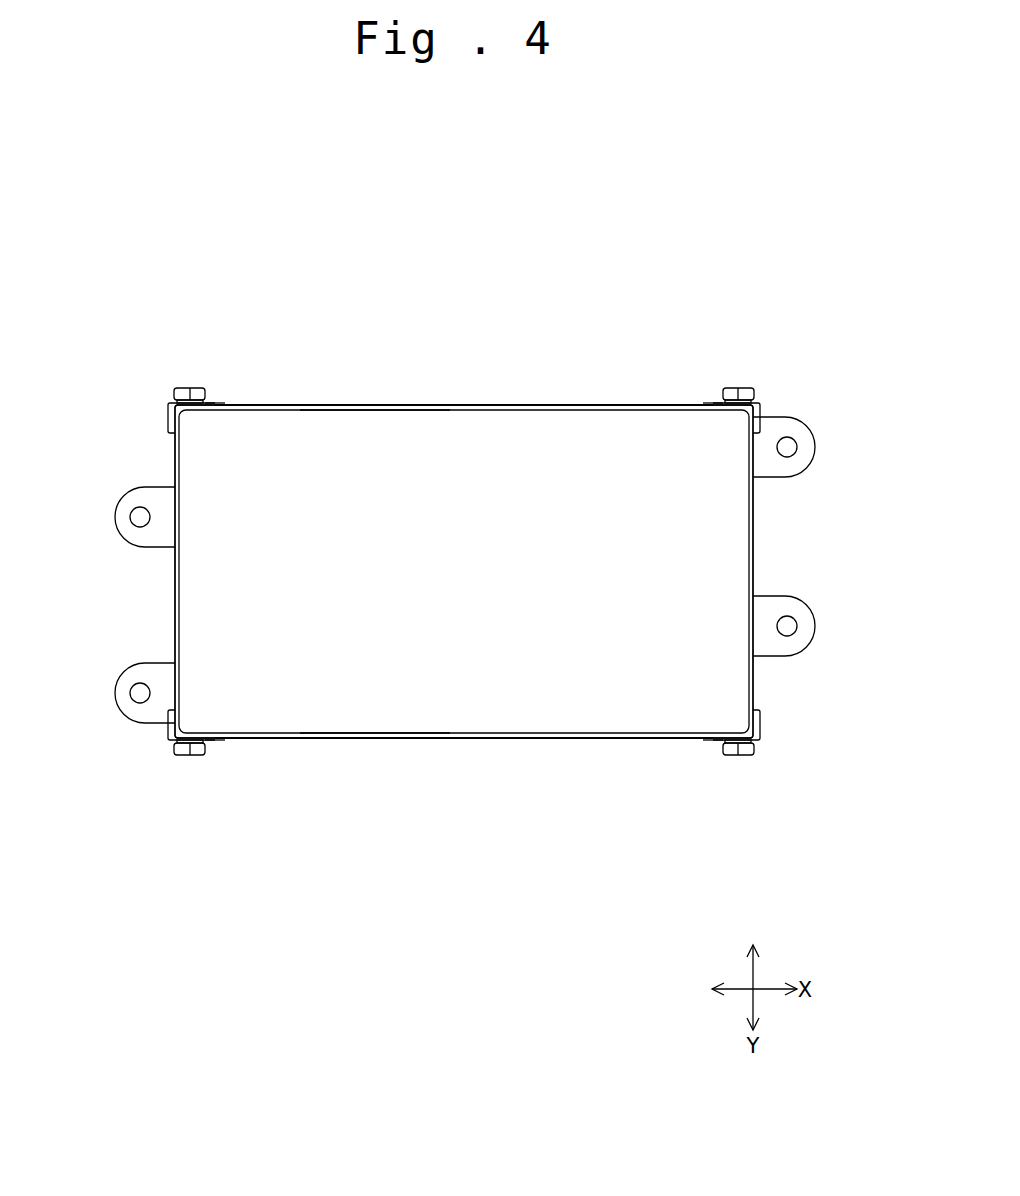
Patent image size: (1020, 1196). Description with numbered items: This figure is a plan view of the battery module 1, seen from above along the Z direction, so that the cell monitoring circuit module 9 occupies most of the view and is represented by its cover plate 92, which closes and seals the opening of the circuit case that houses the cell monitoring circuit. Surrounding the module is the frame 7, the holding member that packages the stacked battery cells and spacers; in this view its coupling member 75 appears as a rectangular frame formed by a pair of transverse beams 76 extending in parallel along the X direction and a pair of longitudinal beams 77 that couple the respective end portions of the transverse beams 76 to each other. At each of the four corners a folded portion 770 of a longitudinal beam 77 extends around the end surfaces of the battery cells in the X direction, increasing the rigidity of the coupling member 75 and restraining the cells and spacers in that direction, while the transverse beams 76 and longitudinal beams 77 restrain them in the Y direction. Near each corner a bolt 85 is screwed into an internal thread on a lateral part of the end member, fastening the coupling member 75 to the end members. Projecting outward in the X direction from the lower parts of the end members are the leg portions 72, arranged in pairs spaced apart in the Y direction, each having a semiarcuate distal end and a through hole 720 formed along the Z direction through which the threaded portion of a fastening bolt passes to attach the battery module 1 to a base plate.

The battery module 1 is at (737, 269).
The cell monitoring circuit module 9 is at (591, 380).
The cover plate 92 is at (545, 448).
The frame 7 is at (464, 573).
The coupling member 75 is at (458, 392).
The transverse beam 76 is at (370, 403).
The longitudinal beam 77 is at (215, 403).
The bolt 85 is at (190, 388).
The folded portion 770 is at (168, 425).
The leg portion 72 is at (128, 487).
The through hole 720 is at (140, 517).